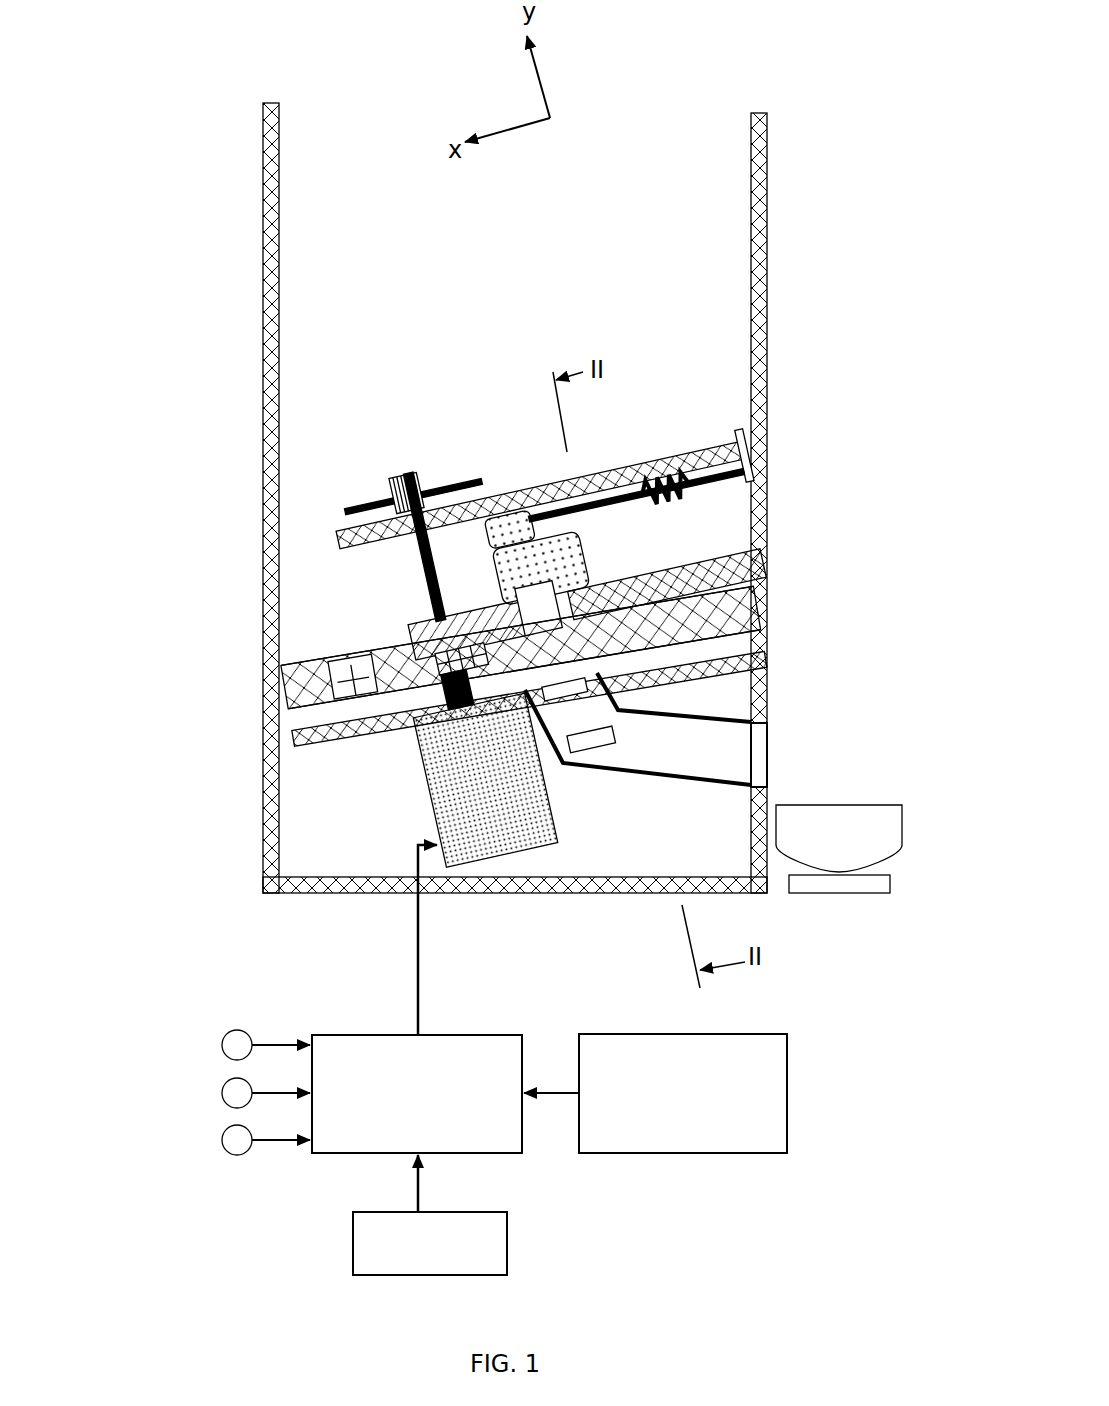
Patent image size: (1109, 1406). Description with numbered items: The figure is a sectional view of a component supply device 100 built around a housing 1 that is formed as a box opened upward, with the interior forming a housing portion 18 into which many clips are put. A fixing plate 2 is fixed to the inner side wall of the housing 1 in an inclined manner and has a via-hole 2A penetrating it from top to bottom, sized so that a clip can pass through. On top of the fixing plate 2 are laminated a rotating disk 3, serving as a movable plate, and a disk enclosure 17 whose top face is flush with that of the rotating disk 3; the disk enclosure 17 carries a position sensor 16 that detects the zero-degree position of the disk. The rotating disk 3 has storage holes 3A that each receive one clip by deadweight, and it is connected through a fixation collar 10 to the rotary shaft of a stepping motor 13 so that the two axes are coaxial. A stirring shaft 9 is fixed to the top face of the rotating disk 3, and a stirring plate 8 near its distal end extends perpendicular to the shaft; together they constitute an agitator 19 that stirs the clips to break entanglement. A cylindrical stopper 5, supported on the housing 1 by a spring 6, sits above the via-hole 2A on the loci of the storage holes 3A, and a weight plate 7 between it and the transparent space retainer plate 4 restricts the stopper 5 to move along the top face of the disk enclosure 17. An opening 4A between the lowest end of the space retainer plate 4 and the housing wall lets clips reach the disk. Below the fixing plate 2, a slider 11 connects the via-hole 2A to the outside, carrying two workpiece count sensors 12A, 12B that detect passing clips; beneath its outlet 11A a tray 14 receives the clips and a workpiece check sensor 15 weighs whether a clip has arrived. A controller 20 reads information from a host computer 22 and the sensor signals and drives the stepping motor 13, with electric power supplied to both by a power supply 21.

The component supply device 100 is at (775, 58).
The housing 1 is at (760, 160).
The housing portion 18 is at (514, 257).
The agitator 19 is at (422, 444).
The space retainer plate 4 is at (680, 472).
The opening 4A is at (308, 552).
The weight plate 7 is at (512, 525).
The stirring plate 8 is at (380, 498).
The stirring shaft 9 is at (425, 597).
The fixation collar 10 is at (440, 632).
The rotating disk 3 is at (400, 660).
The storage hole 3A is at (345, 672).
The position sensor 16 is at (325, 710).
The fixing plate 2 is at (360, 752).
The spring 6 is at (755, 514).
The stopper 5 is at (585, 570).
The disk enclosure 17 is at (745, 560).
The via-hole 2A is at (750, 630).
The workpiece count sensor 12A is at (600, 680).
The workpiece count sensor 12B is at (585, 755).
The slider 11 is at (768, 720).
The outlet 11A is at (758, 746).
The stepping motor 13 is at (507, 845).
The tray 14 is at (893, 820).
The workpiece check sensor 15 is at (862, 890).
The controller 20 is at (485, 1035).
The power supply 21 is at (507, 1245).
The host computer 22 is at (787, 1050).